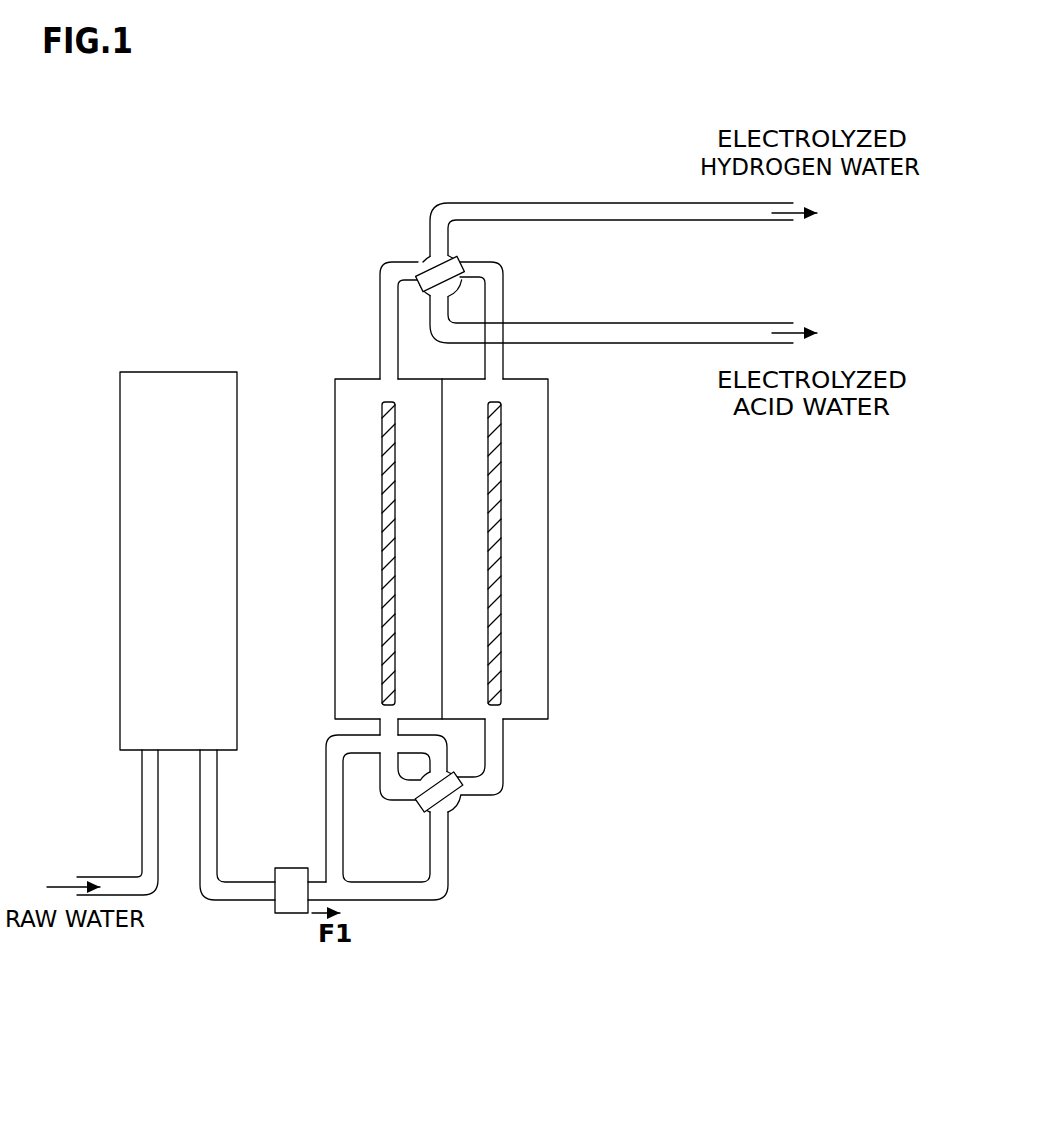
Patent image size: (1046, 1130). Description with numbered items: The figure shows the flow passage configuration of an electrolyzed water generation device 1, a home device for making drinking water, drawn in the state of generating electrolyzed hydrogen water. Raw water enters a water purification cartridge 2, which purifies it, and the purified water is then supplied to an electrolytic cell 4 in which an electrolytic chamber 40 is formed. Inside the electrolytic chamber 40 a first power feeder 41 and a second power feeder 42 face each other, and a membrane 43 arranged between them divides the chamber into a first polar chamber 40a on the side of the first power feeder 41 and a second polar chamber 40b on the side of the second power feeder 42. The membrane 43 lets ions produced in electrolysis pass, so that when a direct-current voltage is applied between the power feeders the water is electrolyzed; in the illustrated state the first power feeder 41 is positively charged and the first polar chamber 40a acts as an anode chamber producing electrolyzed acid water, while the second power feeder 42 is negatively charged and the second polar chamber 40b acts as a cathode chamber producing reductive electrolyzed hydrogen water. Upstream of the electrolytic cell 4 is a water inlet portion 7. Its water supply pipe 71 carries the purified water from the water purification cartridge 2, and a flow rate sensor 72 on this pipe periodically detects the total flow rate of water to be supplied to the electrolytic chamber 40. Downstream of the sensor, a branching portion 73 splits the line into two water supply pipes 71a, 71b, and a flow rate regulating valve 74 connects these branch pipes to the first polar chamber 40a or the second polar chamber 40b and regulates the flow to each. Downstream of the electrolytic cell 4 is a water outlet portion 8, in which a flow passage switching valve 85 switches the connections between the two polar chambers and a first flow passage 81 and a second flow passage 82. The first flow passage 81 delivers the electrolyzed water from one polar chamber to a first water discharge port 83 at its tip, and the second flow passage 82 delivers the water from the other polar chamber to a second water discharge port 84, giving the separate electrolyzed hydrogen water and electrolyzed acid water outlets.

The electrolyzed water generation device 1 is at (759, 89).
The water purification cartridge 2 is at (178, 372).
The electrolytic cell 4 is at (548, 470).
The electrolytic chamber 40 is at (459, 649).
The first polar chamber 40a is at (521, 518).
The second polar chamber 40b is at (363, 467).
The first power feeder 41 is at (493, 586).
The second power feeder 42 is at (390, 623).
The membrane 43 is at (443, 395).
The water inlet portion 7 is at (382, 903).
The water supply pipe 71 is at (210, 858).
The water supply pipe 71a is at (415, 892).
The water supply pipe 71b is at (330, 796).
The flow rate sensor 72 is at (274, 906).
The branching portion 73 is at (335, 891).
The flow rate regulating valve 74 is at (446, 793).
The water outlet portion 8 is at (640, 230).
The first flow passage 81 is at (618, 203).
The second flow passage 82 is at (618, 323).
The first water discharge port 83 is at (790, 222).
The second water discharge port 84 is at (790, 322).
The flow passage switching valve 85 is at (434, 276).